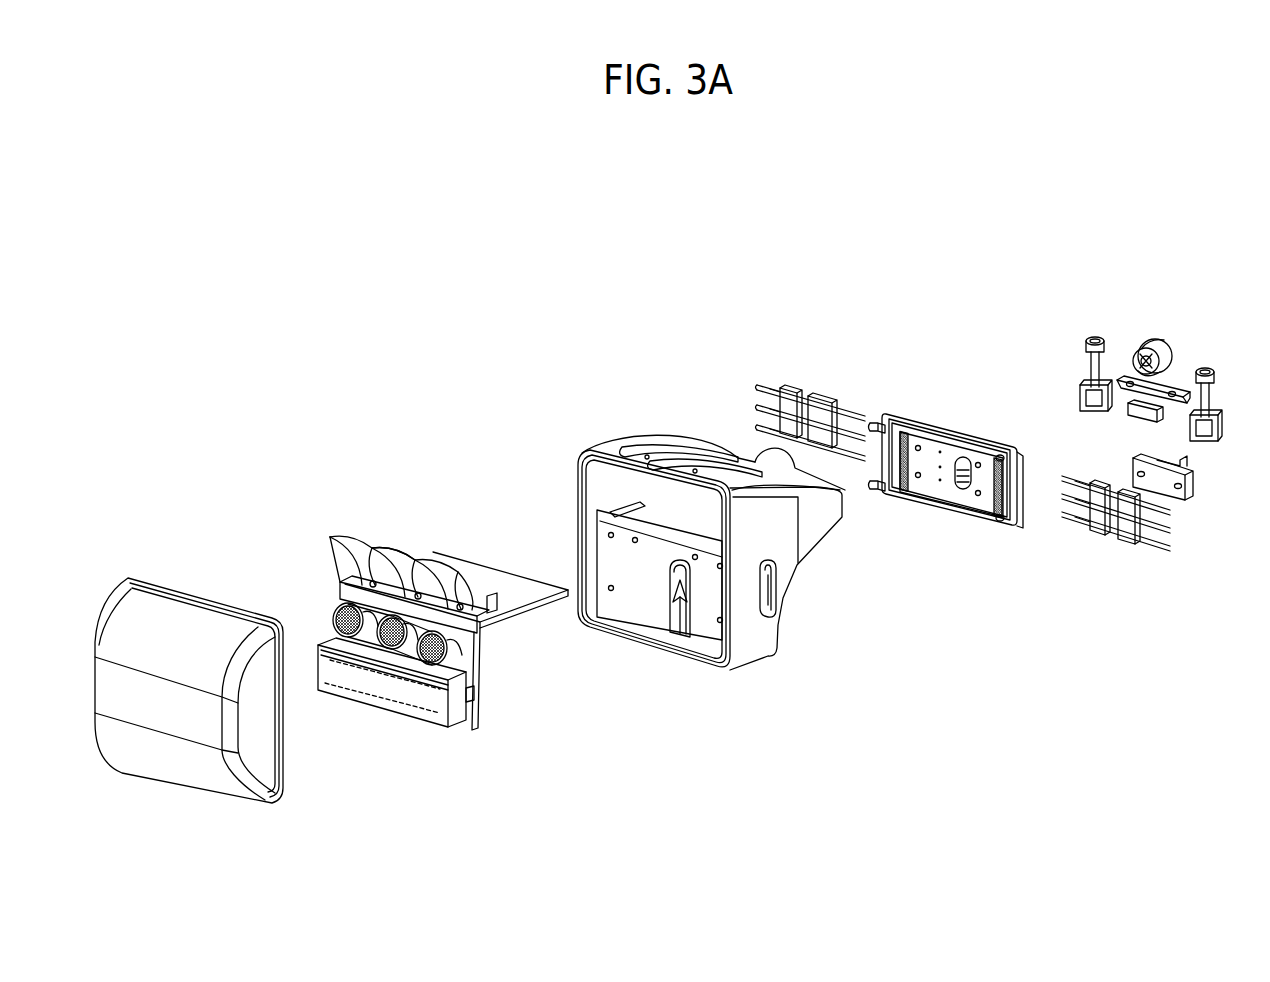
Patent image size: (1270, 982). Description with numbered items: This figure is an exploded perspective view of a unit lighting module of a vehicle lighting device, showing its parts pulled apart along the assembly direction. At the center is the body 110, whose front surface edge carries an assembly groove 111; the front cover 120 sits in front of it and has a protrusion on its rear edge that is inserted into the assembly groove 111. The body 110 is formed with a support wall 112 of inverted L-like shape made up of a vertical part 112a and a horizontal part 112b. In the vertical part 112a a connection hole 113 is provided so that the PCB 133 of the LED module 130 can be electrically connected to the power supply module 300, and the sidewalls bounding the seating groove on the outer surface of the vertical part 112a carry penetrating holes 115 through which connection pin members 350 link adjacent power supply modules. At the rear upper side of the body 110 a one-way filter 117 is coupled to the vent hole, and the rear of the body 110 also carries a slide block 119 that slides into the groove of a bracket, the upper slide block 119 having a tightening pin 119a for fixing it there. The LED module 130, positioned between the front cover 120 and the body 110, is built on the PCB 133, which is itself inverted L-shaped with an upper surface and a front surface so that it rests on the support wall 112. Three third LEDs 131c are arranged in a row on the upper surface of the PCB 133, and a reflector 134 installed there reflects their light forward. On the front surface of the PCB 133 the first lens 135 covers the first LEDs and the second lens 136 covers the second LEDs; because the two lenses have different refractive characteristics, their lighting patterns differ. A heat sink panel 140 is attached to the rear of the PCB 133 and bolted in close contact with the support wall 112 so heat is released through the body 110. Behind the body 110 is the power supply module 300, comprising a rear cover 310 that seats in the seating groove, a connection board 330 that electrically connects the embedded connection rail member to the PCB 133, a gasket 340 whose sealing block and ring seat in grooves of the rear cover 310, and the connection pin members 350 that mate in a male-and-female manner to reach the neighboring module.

The body 110 is at (744, 508).
The assembly groove 111 is at (593, 452).
The support wall 112 is at (670, 425).
The vertical part 112a is at (706, 572).
The horizontal part 112b is at (665, 512).
The connection hole 113 is at (682, 600).
The penetrating hole 115 is at (770, 585).
The one-way filter 117 is at (1152, 342).
The slide block 119 is at (1222, 432).
The tightening pin 119a is at (1220, 387).
The front cover 120 is at (181, 551).
The LED module 130 is at (353, 505).
The third LEDs 131c is at (345, 573).
The PCB 133 is at (483, 558).
The reflector 134 is at (397, 556).
The first lens 135 is at (347, 683).
The second lens 136 is at (418, 653).
The heat sink panel 140 is at (480, 693).
The power supply module 300 is at (922, 388).
The rear cover 310 is at (1023, 483).
The connection board 330 is at (947, 475).
The gasket 340 is at (932, 424).
The connection pin member 350 is at (789, 365).